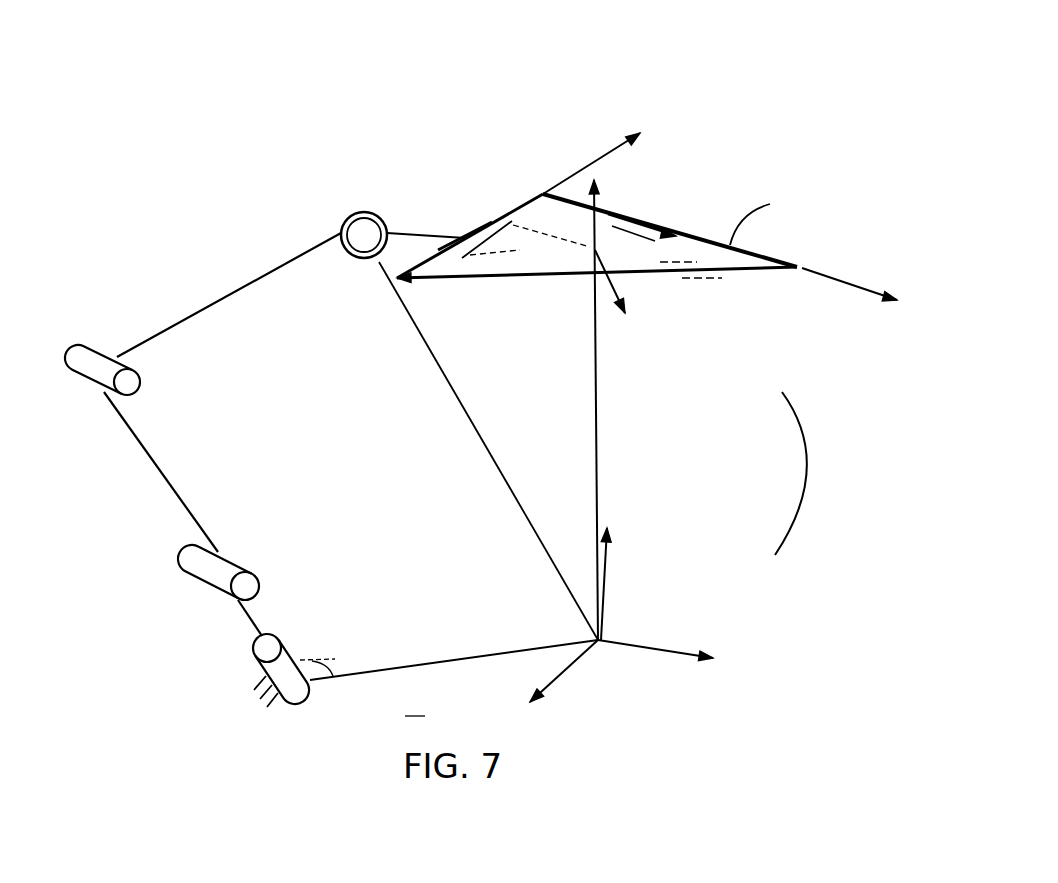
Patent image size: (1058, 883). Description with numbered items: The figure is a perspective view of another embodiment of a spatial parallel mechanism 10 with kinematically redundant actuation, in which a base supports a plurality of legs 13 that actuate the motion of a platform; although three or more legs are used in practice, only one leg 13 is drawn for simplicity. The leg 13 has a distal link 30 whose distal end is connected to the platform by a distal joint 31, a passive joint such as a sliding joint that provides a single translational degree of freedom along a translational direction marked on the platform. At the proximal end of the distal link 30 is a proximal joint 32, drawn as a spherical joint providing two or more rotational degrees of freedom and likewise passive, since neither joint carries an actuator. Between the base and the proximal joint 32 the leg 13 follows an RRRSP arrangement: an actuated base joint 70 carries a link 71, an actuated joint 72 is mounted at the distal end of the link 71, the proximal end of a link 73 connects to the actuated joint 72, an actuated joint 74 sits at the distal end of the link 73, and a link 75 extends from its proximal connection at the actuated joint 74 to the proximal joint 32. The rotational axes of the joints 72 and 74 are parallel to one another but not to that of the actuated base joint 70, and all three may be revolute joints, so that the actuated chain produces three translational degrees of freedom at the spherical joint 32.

The spatial parallel mechanism 10 is at (230, 118).
The leg 13 is at (180, 480).
The distal link 30 is at (442, 236).
The distal joint 31 is at (470, 222).
The proximal joint 32 is at (368, 198).
The actuated base joint 70 is at (296, 700).
The link 71 is at (240, 620).
The actuated joint 72 is at (247, 570).
The link 73 is at (181, 495).
The actuated joint 74 is at (83, 378).
The link 75 is at (248, 292).